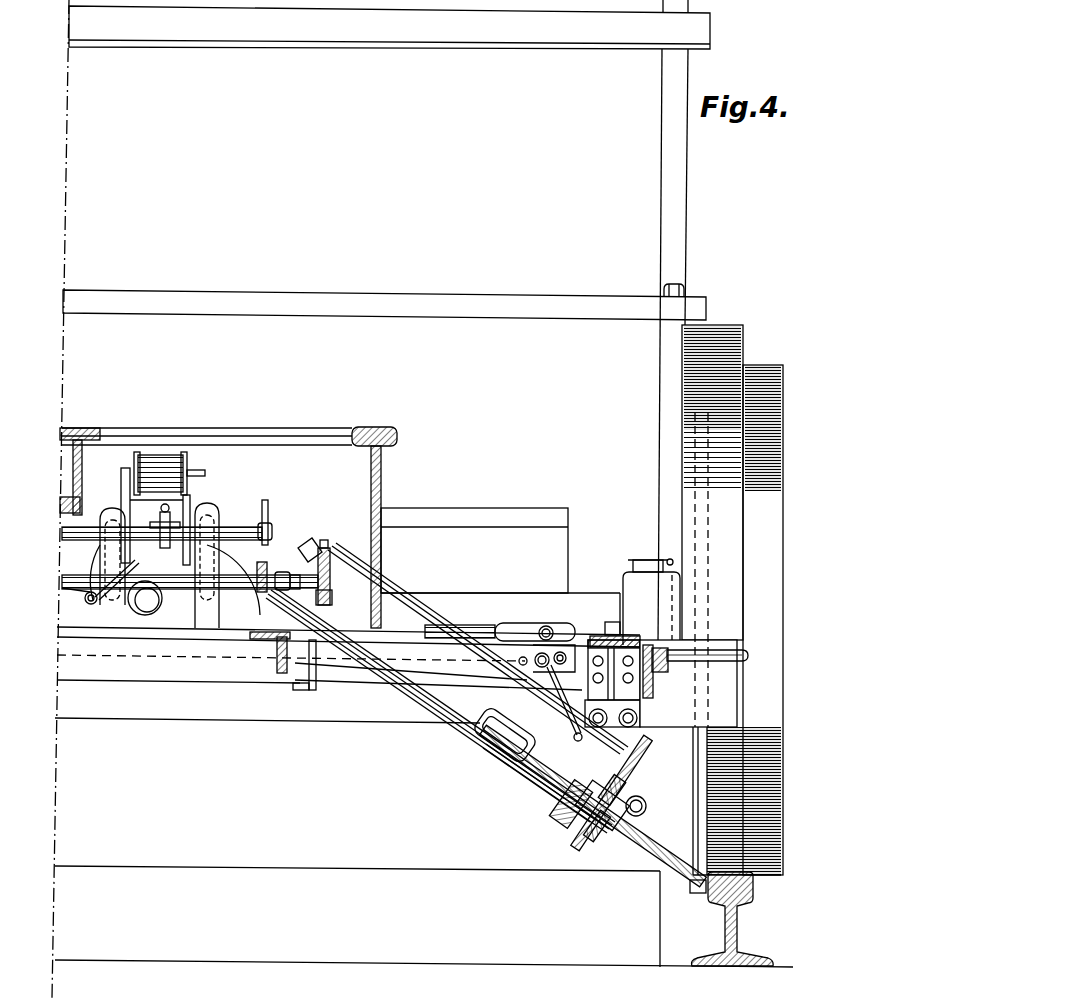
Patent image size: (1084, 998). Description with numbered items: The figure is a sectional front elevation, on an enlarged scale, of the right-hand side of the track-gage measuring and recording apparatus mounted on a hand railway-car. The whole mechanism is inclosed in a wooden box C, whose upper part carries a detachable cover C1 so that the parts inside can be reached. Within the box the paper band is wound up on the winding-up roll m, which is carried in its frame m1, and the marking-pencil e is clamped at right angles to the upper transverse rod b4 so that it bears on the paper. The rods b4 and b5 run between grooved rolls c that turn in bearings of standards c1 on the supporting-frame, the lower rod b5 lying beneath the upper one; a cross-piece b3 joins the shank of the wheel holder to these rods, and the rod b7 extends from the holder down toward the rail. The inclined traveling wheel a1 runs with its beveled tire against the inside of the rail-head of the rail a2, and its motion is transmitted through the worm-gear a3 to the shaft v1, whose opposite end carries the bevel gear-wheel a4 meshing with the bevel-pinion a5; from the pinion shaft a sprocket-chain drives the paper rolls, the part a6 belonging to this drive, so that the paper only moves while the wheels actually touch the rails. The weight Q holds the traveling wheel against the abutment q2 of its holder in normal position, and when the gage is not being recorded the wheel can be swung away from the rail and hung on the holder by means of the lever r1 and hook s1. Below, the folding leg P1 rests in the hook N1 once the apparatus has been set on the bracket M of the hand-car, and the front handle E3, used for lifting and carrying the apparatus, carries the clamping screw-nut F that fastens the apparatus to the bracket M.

The detachable cover C1 is at (367, 432).
The wooden box C is at (383, 493).
The winding-up roll m is at (169, 473).
The drum frame m1 is at (122, 502).
The marking-pencil e is at (168, 512).
The upper transverse rod b4 is at (232, 528).
The grooved roll c is at (108, 566).
The cross-piece b3 is at (255, 590).
The lower transverse rod b5 is at (75, 570).
The abutment q2 is at (75, 585).
The weight Q is at (147, 618).
The pad a6 is at (268, 562).
The bevel gear-wheel a4 is at (330, 548).
The bevel-pinion a5 is at (330, 598).
The shaft of the worm-wheel v1 is at (420, 614).
The lever r1 is at (427, 629).
The folding leg P1 is at (422, 672).
The hook N1 is at (296, 663).
The brake rod b7 is at (420, 700).
The hook s1 is at (540, 722).
The traveling wheel a1 is at (520, 780).
The standard c1 is at (612, 843).
The worm-gear a3 is at (650, 745).
The bracket M is at (688, 570).
The clamping screw-nut F is at (668, 668).
The handle E3 is at (718, 655).
The rail a2 is at (740, 927).